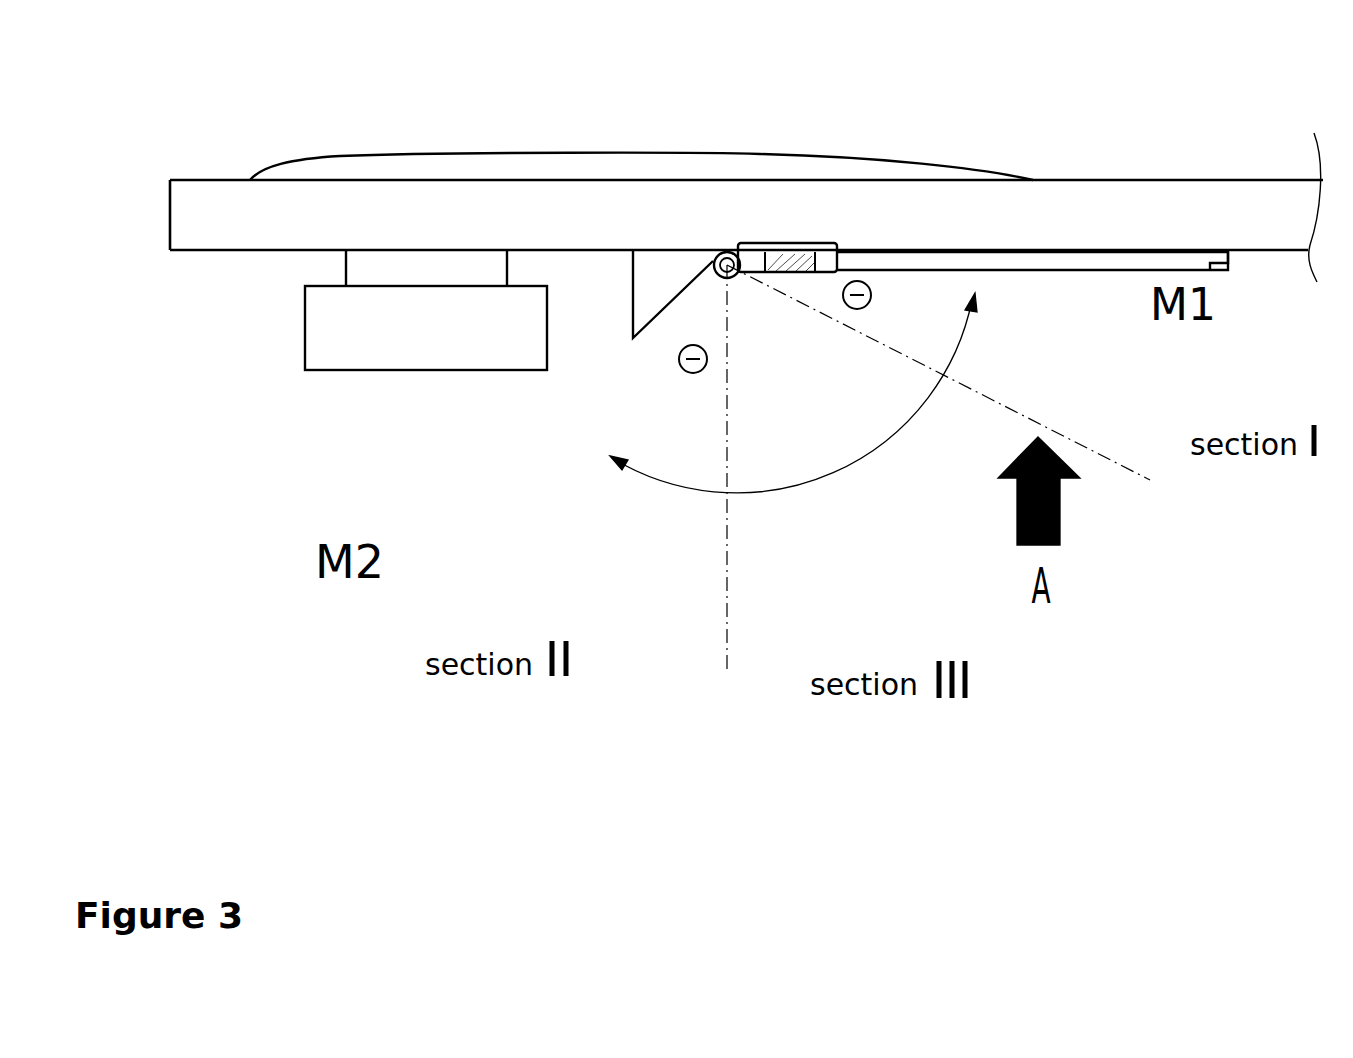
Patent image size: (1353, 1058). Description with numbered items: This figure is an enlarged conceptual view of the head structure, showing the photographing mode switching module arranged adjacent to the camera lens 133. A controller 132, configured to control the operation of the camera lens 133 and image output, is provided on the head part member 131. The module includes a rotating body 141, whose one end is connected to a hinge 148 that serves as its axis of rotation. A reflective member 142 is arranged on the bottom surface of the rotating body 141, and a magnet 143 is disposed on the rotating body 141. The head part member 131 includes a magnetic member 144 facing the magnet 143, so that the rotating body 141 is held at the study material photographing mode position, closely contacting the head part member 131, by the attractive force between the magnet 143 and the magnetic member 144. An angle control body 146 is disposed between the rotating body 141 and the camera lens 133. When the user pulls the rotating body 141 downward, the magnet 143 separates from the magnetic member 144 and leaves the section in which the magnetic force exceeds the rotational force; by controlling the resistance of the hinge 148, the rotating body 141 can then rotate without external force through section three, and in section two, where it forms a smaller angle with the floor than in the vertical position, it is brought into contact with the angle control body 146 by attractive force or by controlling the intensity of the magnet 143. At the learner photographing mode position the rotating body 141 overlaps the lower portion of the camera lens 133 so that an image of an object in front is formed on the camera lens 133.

The head part member 131 is at (225, 212).
The controller 132 is at (513, 155).
The camera lens 133 is at (358, 348).
The rotating body 141 is at (1228, 267).
The reflective member 142 is at (1057, 272).
The magnet 143 is at (785, 258).
The magnetic member 144 is at (763, 243).
The angle control body 146 is at (663, 278).
The hinge 148 is at (726, 252).